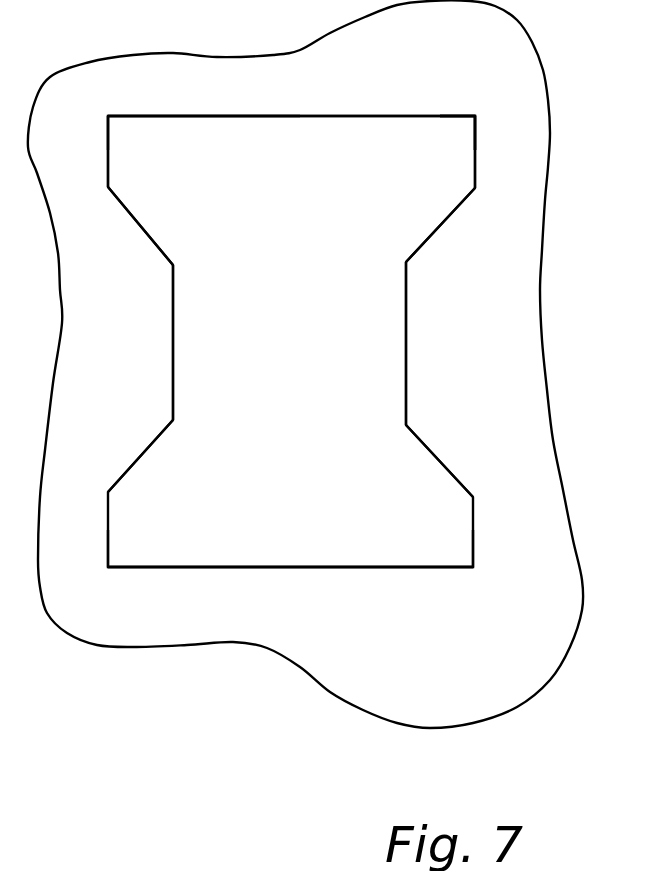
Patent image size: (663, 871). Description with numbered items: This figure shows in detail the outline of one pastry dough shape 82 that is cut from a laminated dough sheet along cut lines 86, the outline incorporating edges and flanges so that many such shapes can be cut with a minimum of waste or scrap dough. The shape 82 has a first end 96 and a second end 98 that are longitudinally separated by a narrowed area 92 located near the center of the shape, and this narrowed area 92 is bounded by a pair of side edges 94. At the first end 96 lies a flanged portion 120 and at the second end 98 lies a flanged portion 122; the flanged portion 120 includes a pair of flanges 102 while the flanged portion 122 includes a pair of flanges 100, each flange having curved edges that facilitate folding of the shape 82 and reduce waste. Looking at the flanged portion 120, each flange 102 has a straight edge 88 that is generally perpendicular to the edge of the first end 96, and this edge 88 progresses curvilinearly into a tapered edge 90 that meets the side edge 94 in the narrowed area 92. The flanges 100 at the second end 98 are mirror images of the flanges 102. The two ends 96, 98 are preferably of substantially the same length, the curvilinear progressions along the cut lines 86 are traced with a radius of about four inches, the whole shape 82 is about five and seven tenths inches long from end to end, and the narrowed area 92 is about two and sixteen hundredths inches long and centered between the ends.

The shape 82 is at (362, 532).
The cut line 86 is at (475, 110).
The edge 88 is at (108, 173).
The tapered edge 90 is at (150, 238).
The narrowed area 92 is at (305, 398).
The side edge 94 is at (172, 370).
The first end 96 is at (305, 116).
The second end 98 is at (230, 543).
The flange 100 is at (128, 540).
The flange 102 is at (155, 142).
The flanged portion 120 is at (223, 130).
The flanged portion 122 is at (287, 547).